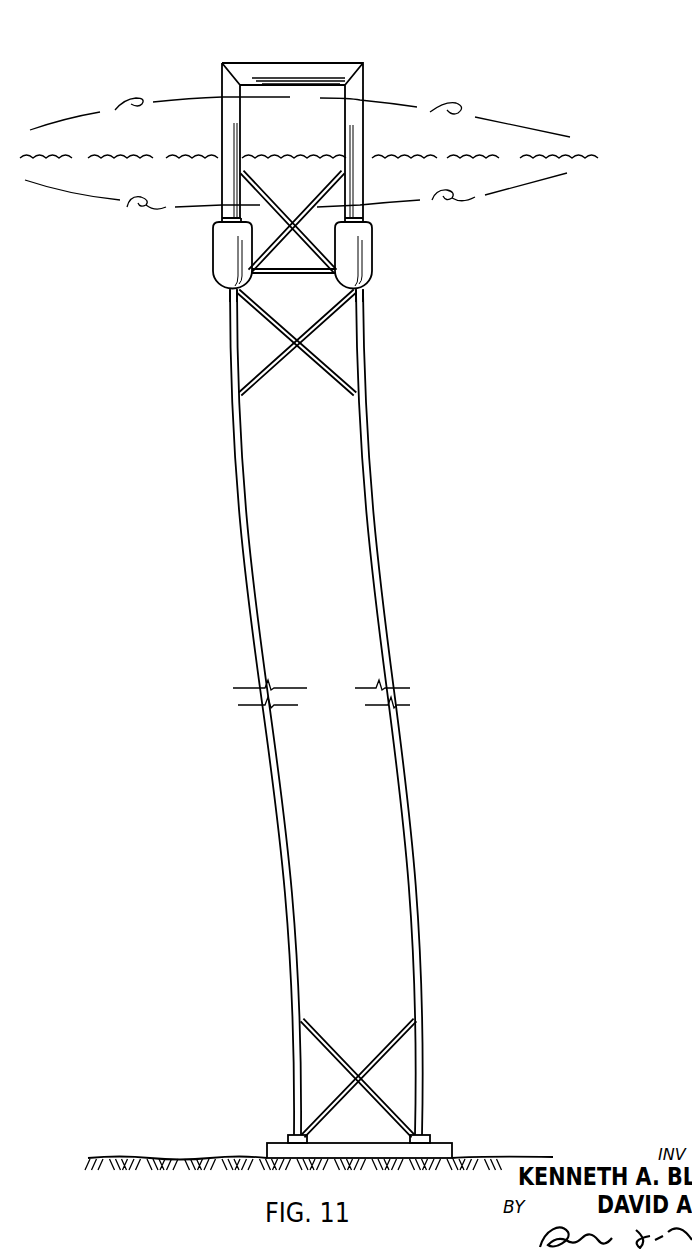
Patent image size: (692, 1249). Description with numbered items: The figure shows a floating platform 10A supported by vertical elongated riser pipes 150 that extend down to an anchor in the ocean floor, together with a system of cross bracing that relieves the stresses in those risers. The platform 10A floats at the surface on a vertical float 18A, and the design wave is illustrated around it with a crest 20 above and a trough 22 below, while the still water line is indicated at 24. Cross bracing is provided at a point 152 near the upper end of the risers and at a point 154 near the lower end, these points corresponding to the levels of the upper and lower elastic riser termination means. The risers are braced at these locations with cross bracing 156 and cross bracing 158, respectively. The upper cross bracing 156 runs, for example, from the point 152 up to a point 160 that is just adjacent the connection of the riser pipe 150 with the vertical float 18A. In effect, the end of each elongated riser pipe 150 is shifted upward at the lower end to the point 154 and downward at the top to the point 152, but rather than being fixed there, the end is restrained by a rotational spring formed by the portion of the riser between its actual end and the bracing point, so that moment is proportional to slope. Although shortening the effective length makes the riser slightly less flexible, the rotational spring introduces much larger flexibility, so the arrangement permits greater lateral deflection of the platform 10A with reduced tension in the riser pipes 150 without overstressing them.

The platform 10A is at (326, 70).
The crest 20 is at (475, 117).
The still water line 24 is at (560, 157).
The trough 22 is at (500, 190).
The vertical float 18A is at (215, 247).
The point 160 is at (230, 290).
The vertical elongated riser pipes 150 is at (378, 567).
The cross bracing 156 is at (318, 358).
The point 152 is at (354, 388).
The cross bracing 158 is at (336, 1060).
The point 154 is at (300, 1033).